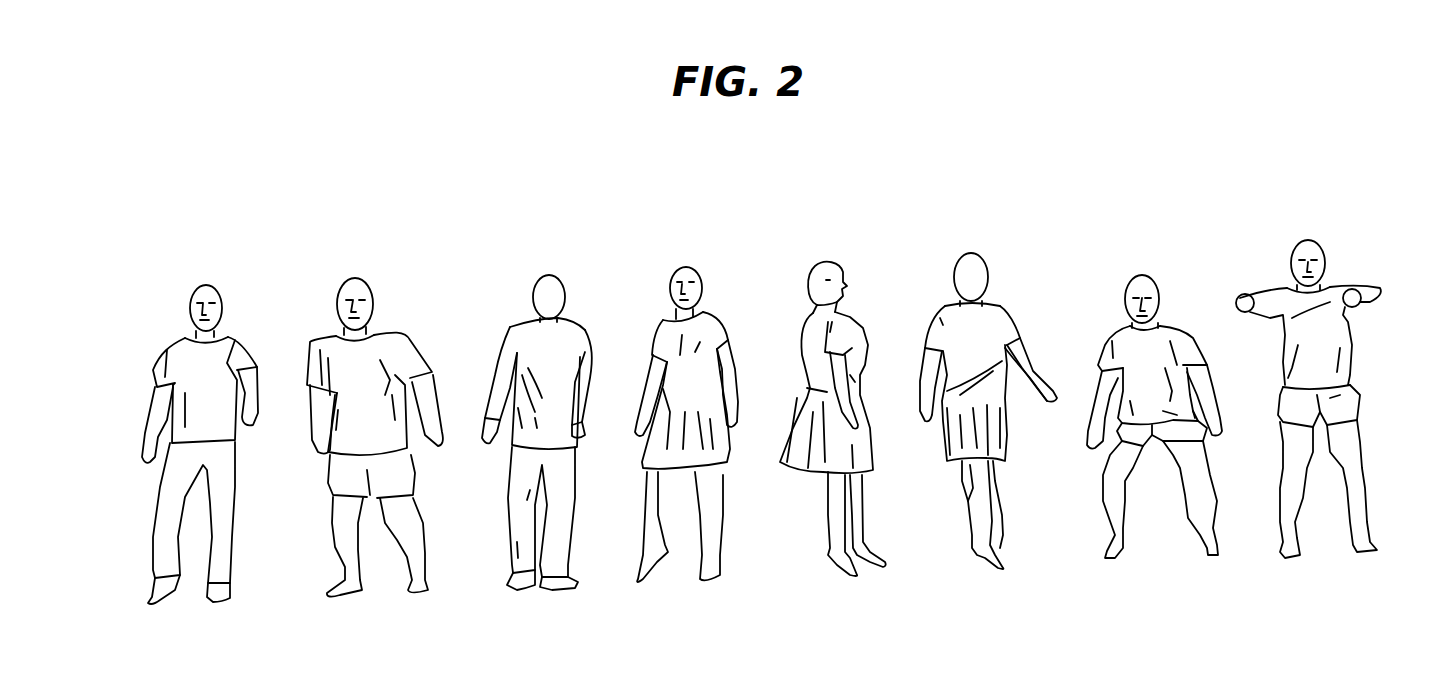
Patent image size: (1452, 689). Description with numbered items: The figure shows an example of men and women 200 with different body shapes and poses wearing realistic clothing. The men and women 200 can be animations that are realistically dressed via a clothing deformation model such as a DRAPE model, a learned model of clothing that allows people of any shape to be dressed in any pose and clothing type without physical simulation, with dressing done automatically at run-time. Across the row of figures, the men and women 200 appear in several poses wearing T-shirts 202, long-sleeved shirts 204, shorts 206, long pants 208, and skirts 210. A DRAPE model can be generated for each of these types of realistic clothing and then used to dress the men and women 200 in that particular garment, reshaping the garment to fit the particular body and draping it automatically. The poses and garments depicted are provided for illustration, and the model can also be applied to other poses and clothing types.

The men and women 200 is at (505, 197).
The T-shirts 202 is at (177, 332).
The long-sleeved shirts 204 is at (525, 315).
The shorts 206 is at (378, 495).
The long pants 208 is at (178, 553).
The skirts 210 is at (730, 464).